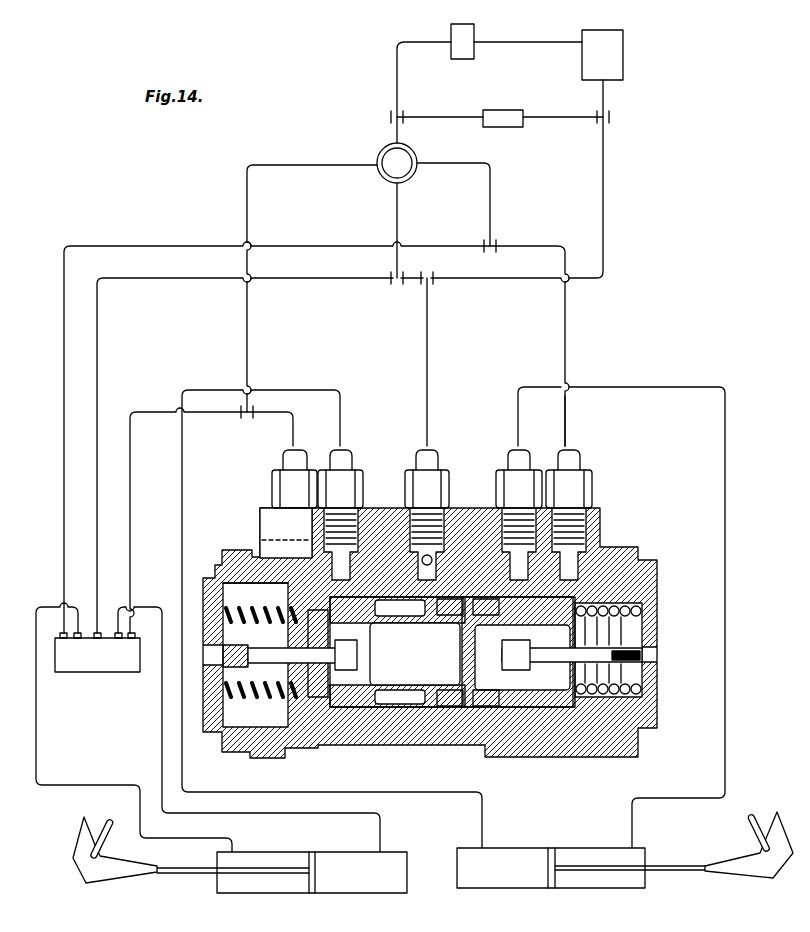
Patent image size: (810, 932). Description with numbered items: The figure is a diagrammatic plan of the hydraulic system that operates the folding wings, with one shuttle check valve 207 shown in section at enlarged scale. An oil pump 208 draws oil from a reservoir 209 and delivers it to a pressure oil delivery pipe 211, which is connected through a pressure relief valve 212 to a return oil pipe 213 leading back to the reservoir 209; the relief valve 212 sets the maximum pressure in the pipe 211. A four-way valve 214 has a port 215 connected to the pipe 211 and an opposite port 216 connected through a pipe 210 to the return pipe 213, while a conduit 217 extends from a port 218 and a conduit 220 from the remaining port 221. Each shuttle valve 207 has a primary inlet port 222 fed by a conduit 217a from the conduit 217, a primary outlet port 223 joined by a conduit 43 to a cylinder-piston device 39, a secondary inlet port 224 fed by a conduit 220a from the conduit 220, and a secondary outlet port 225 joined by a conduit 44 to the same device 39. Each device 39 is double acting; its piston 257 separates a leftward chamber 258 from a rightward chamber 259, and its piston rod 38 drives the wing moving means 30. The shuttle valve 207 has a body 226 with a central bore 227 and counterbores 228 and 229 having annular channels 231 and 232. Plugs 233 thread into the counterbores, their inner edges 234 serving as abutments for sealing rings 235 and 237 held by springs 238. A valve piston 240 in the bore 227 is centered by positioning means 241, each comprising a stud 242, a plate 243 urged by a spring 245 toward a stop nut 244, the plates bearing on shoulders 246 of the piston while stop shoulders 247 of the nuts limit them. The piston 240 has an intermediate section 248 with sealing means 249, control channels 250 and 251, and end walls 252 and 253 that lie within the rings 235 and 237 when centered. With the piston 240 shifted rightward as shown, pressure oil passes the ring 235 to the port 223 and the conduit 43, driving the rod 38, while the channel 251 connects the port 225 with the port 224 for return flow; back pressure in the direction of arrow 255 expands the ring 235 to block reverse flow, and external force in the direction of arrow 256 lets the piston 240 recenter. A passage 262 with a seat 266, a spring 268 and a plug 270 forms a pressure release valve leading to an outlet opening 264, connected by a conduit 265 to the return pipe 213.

The wing moving means 30 is at (115, 882).
The piston rod 38 is at (675, 872).
The cylinder-piston device 39 is at (285, 893).
The conduit 43 is at (182, 470).
The conduit 44 is at (725, 535).
The shuttle check valve 207 is at (93, 662).
The oil pump 208 is at (468, 36).
The reservoir 209 is at (618, 40).
The pipe 210 is at (400, 225).
The pressure oil delivery pipe 211 is at (397, 95).
The pressure relief valve 212 is at (506, 108).
The return oil pipe 213 is at (603, 150).
The four-way valve 214 is at (390, 155).
The port 215 is at (395, 155).
The port 216 is at (402, 182).
The conduit 217 is at (292, 165).
The conduit 217a is at (143, 412).
The port 218 is at (380, 172).
The conduit 220 is at (490, 208).
The conduit 220a is at (118, 246).
The port 221 is at (415, 160).
The primary inlet port 222 is at (295, 565).
The primary outlet port 223 is at (130, 642).
The secondary inlet port 224 is at (60, 645).
The secondary outlet port 225 is at (80, 642).
The body 226 is at (430, 745).
The central bore 227 is at (400, 720).
The counterbore 228 is at (355, 745).
The counterbore 229 is at (530, 740).
The annular channel 231 is at (280, 755).
The annular channel 232 is at (585, 757).
The plug 233 is at (210, 735).
The inner edge 234 is at (300, 708).
The sealing ring 235 is at (320, 755).
The sealing ring 237 is at (520, 735).
The spring 238 is at (348, 735).
The valve piston 240 is at (425, 695).
The positioning means 241 is at (640, 628).
The stud 242 is at (640, 652).
The plate 243 is at (640, 678).
The stop nut 244 is at (545, 650).
The spring 245 is at (640, 702).
The shoulder 246 is at (370, 695).
The stop shoulder 247 is at (525, 665).
The intermediate section 248 is at (470, 665).
The sealing means 249 is at (470, 730).
The annular channel 250 is at (405, 680).
The annular channel 251 is at (553, 745).
The cylindrical wall 252 is at (300, 600).
The cylindrical wall 253 is at (645, 580).
The arrow 255 is at (750, 893).
The arrow 256 is at (695, 850).
The piston 257 is at (548, 875).
The leftward chamber 258 is at (487, 878).
The rightward chamber 259 is at (620, 878).
The passage 262 is at (380, 520).
The outlet opening 264 is at (445, 560).
The conduit 265 is at (427, 350).
The seat 266 is at (109, 924).
The spring 268 is at (189, 924).
The plug 270 is at (249, 921).